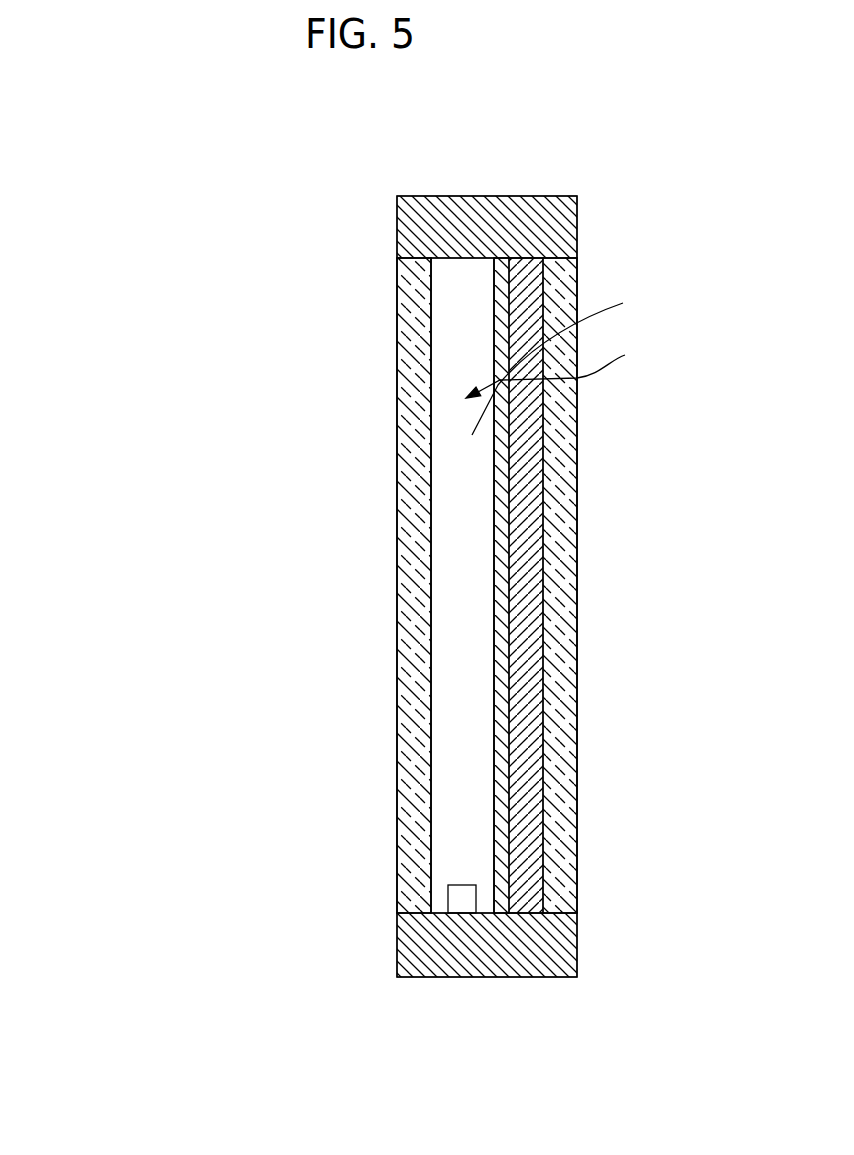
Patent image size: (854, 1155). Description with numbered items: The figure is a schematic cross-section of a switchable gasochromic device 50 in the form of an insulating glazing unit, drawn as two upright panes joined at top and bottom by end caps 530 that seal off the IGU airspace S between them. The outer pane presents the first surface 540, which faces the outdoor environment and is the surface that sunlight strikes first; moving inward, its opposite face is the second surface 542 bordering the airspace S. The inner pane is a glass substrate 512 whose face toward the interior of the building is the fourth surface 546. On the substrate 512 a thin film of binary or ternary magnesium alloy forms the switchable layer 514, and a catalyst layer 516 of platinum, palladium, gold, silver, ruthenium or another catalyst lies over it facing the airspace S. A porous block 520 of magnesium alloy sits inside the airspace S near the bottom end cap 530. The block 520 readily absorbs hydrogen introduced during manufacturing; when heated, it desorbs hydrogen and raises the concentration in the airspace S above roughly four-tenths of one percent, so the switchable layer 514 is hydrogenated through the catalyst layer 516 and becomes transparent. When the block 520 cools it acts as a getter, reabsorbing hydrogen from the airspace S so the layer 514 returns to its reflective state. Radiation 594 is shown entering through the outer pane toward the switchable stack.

The light guide device 50 is at (157, 485).
The end cap 530 is at (462, 213).
The first surface 540 is at (397, 518).
The substrate 512 is at (397, 452).
The fourth surface 546 is at (578, 413).
The layer 514 is at (538, 499).
The catalyst layer 516 is at (505, 545).
The second surface 542 is at (432, 650).
The porous block 520 is at (462, 900).
The light path 594 is at (574, 362).
The airspace S is at (556, 369).